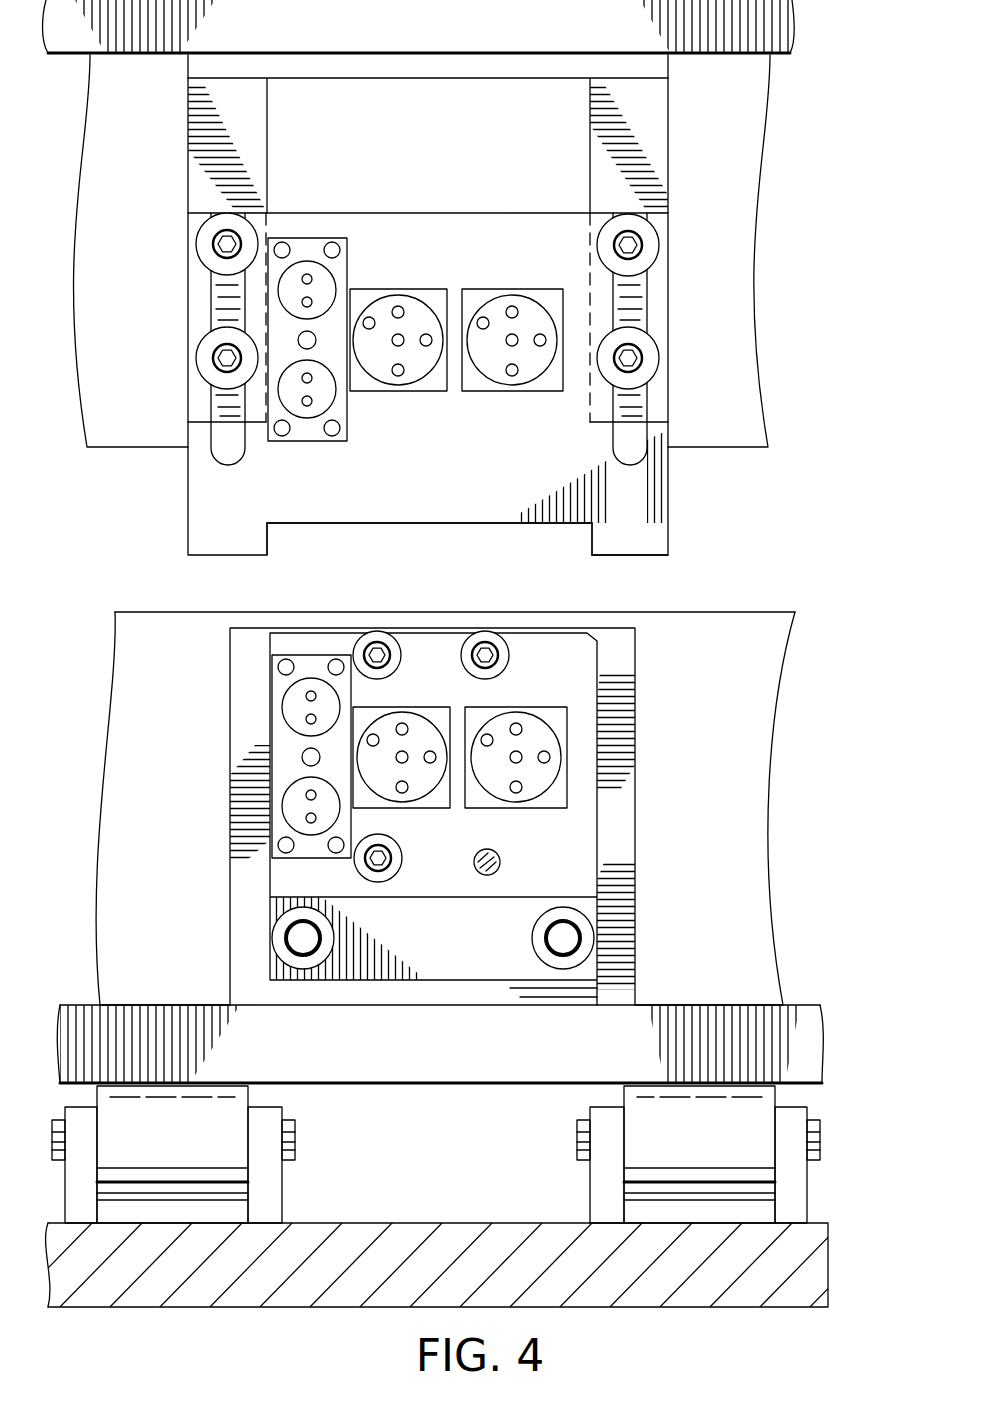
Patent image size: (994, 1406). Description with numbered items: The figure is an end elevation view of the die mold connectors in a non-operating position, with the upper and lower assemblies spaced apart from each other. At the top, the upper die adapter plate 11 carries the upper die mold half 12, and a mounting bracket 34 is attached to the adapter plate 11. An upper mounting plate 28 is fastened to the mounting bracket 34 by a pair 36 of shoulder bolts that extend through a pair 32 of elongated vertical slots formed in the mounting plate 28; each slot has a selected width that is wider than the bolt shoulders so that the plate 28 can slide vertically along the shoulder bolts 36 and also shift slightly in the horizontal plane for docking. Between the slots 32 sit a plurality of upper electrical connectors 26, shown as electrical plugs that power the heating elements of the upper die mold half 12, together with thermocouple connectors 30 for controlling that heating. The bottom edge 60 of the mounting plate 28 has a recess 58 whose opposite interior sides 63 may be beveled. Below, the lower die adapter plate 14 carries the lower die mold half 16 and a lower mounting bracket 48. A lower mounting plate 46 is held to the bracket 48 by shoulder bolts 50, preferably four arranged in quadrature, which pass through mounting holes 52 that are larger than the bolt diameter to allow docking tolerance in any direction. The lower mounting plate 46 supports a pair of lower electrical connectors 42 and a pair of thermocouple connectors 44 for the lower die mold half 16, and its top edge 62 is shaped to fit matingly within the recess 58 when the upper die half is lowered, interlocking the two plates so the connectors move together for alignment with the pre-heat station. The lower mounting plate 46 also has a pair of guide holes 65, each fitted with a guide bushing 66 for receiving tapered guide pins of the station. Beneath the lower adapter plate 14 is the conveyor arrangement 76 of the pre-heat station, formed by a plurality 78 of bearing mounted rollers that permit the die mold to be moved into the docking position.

The upper die adapter plate 11 is at (368, 25).
The upper die mold half 12 is at (700, 205).
The lower die adapter plate 14 is at (437, 1060).
The lower die mold half 16 is at (112, 826).
The upper electrical connector 26 is at (473, 289).
The upper mounting plate 28 is at (425, 213).
The thermocouple connector 30 is at (348, 266).
The pair of elongated vertical slots 32 is at (215, 309).
The mounting bracket 34 is at (668, 118).
The shoulder bolts 36 is at (200, 242).
The lower electrical connector 42 is at (480, 707).
The thermocouple connector 44 is at (282, 703).
The lower mounting plate 46 is at (587, 830).
The lower mounting bracket 48 is at (635, 770).
The shoulder bolts 50 is at (480, 632).
The mounting holes 52 is at (500, 862).
The recess 58 is at (388, 525).
The bottom edge 60 is at (650, 556).
The top edge 62 is at (565, 628).
The interior sides 63 is at (267, 540).
The guide holes 65 is at (295, 935).
The guide bushings 66 is at (278, 950).
The conveyor arrangement 76 is at (407, 1230).
The bearing mounted rollers 78 is at (296, 1133).